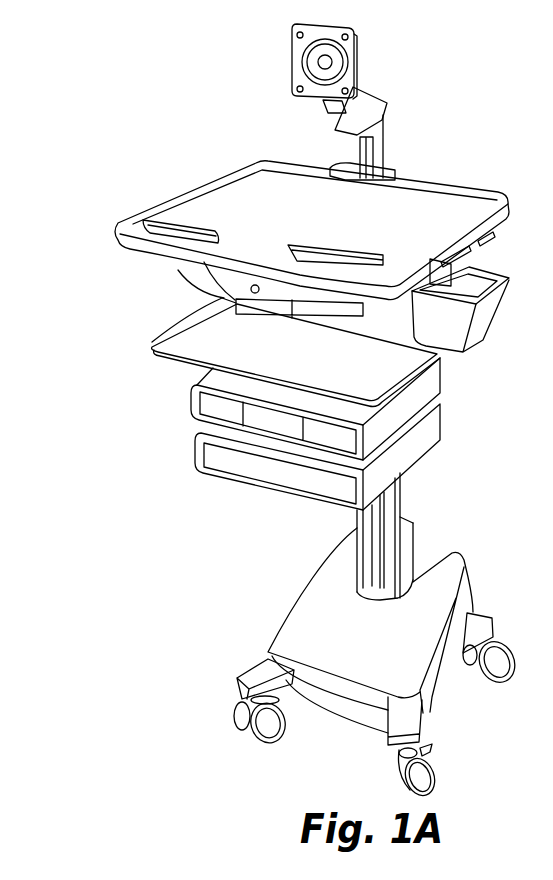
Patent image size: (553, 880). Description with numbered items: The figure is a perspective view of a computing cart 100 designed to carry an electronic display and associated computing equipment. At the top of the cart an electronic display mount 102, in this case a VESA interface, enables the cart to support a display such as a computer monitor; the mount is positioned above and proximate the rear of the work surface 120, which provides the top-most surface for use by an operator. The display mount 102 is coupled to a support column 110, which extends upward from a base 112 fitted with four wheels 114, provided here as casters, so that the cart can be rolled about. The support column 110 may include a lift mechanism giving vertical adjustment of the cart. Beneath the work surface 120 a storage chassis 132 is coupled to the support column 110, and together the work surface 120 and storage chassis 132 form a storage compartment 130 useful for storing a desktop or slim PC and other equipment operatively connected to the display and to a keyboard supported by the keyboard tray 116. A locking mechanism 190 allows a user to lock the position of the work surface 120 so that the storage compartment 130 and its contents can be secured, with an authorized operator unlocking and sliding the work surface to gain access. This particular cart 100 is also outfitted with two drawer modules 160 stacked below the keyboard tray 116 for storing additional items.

The computing cart 100 is at (445, 84).
The electronic display mount 102 is at (290, 61).
The support column 110 is at (373, 542).
The base 112 is at (292, 607).
The wheels 114 is at (265, 747).
The keyboard tray 116 is at (183, 347).
The work surface 120 is at (200, 193).
The storage compartment 130 is at (148, 263).
The storage chassis 132 is at (186, 283).
The drawer modules 160 is at (190, 399).
The locking mechanism 190 is at (212, 298).